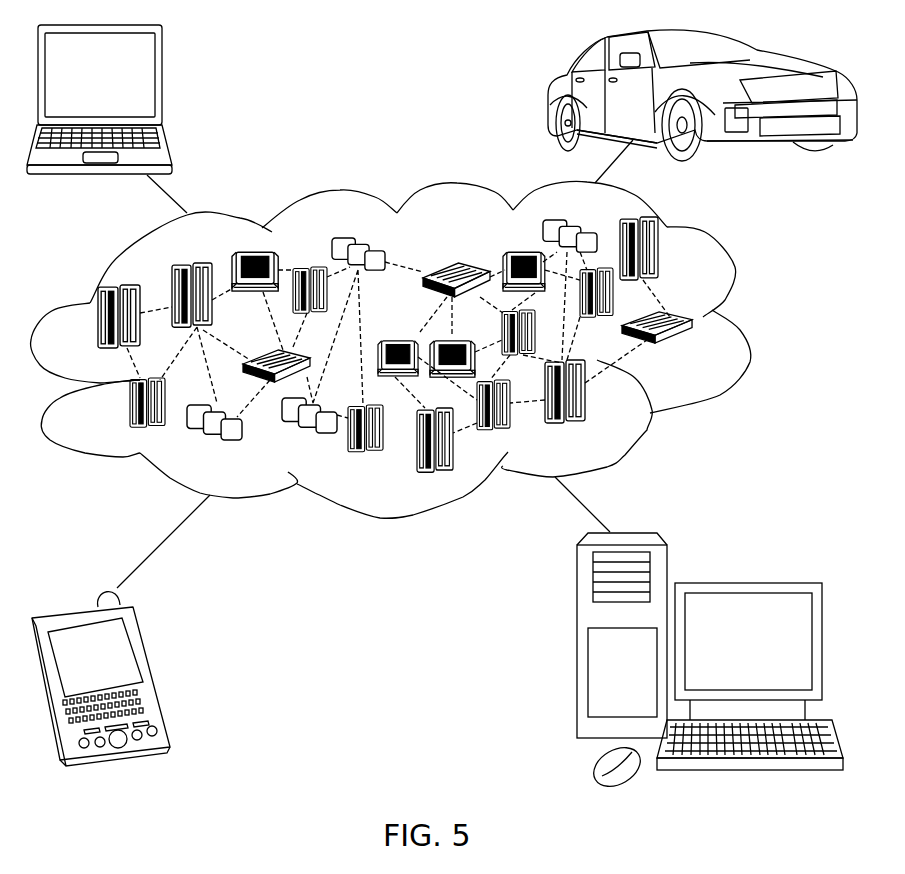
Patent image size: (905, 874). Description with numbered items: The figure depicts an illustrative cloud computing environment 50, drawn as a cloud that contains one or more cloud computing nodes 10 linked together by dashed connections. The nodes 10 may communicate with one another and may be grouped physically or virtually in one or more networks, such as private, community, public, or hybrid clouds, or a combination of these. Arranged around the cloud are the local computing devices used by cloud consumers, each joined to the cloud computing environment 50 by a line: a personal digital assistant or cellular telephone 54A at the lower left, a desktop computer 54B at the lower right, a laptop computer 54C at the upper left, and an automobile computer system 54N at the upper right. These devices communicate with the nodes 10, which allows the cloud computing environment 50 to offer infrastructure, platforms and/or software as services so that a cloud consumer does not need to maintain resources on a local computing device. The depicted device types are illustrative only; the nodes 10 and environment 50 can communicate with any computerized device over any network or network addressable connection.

The cloud computing node 10 is at (693, 352).
The cloud computing environment 50 is at (747, 328).
The personal digital assistant or cellular telephone 54A is at (151, 672).
The desktop computer 54B is at (744, 583).
The laptop computer 54C is at (162, 78).
The automobile computer system 54N is at (551, 98).